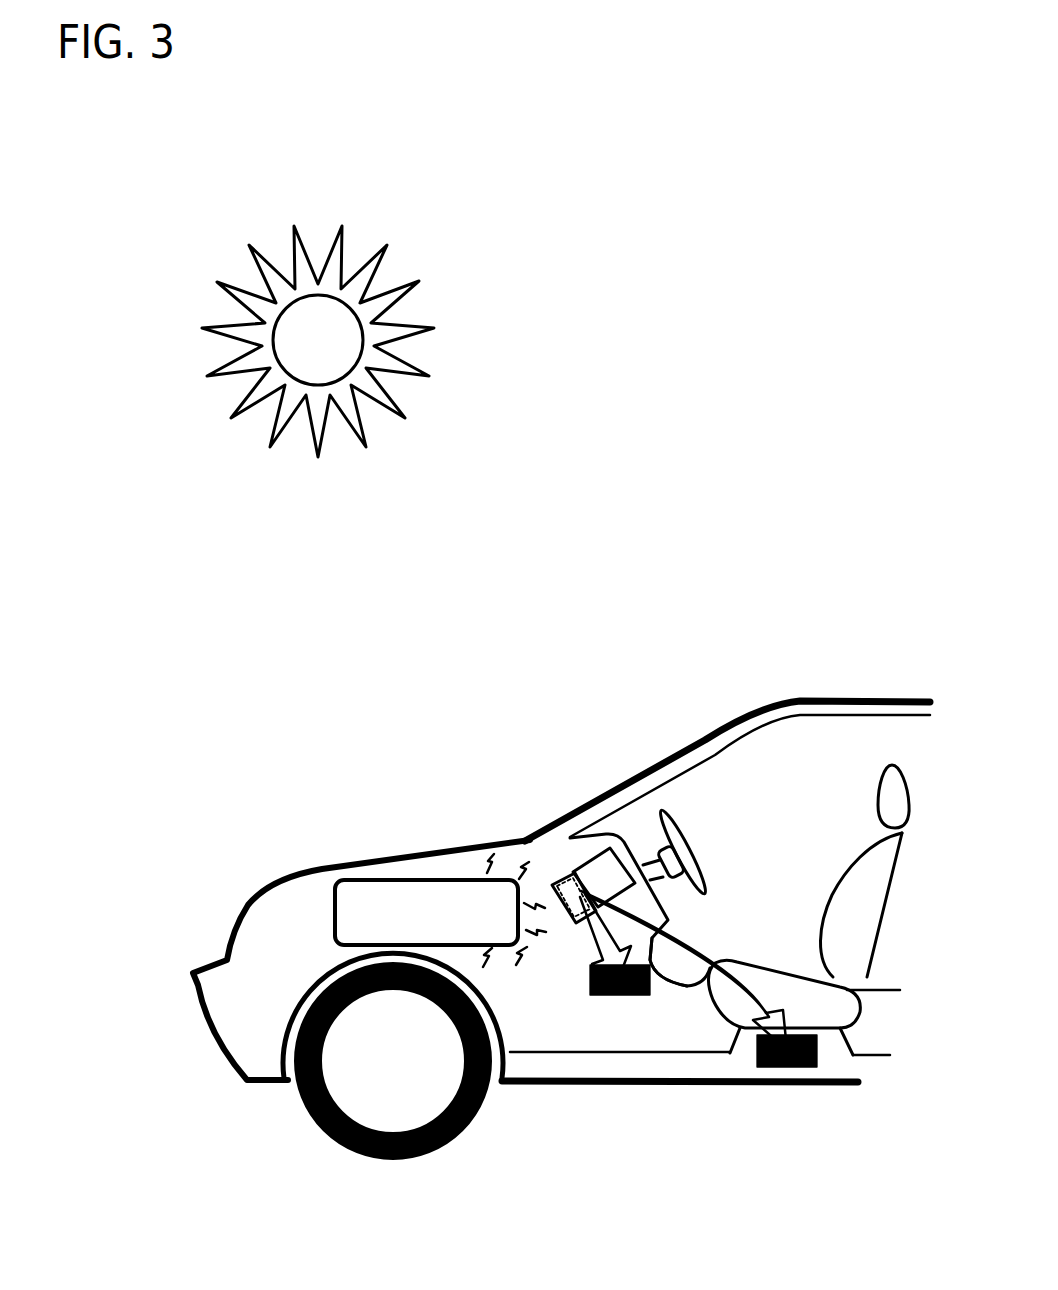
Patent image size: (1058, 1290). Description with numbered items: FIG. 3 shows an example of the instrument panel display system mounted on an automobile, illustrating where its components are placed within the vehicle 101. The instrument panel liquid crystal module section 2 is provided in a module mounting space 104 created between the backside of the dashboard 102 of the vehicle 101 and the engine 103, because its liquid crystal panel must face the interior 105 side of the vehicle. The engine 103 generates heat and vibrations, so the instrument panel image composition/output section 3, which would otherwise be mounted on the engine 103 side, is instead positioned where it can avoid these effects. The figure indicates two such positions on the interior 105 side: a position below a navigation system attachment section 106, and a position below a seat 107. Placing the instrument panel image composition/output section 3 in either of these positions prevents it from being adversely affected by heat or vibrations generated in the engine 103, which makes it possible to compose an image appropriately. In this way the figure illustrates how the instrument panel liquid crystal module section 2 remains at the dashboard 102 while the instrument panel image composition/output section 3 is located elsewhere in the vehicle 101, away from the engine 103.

The vehicle 101 is at (527, 667).
The dashboard 102 is at (600, 837).
The engine 103 is at (372, 878).
The module mounting space 104 is at (560, 877).
The interior 105 is at (783, 732).
The navigation system attachment section 106 is at (673, 967).
The seat 107 is at (782, 997).
The instrument panel liquid crystal module section 2 is at (570, 920).
The instrument panel image composition/output section 3 is at (620, 997).